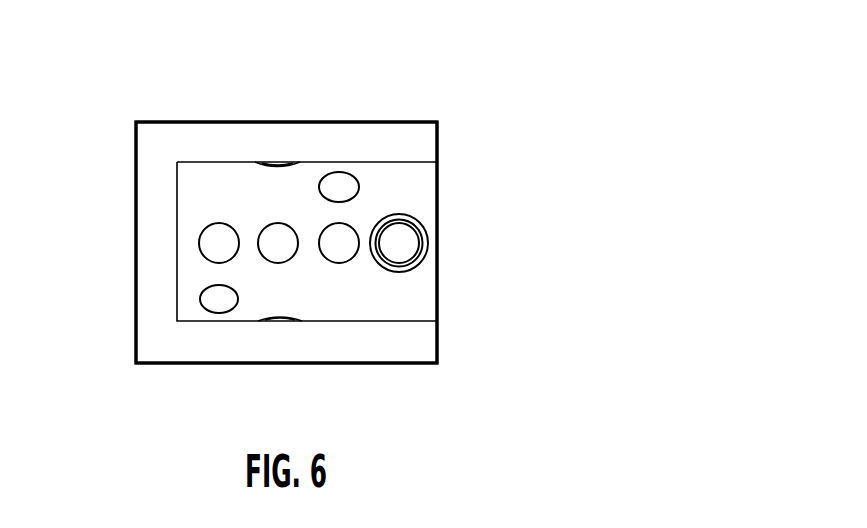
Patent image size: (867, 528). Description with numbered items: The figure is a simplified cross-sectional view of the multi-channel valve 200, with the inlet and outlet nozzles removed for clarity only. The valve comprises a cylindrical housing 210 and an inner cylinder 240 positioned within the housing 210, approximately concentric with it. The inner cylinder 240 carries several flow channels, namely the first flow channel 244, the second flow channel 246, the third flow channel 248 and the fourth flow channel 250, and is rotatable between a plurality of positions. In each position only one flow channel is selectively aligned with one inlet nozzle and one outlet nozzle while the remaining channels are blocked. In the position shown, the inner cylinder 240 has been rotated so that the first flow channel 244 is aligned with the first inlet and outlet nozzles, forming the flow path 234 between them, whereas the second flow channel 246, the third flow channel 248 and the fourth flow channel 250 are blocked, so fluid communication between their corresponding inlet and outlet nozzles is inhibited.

The multi-channel valve 200 is at (448, 97).
The cylindrical housing 210 is at (165, 138).
The flow path 234 is at (398, 247).
The inner cylinder 240 is at (255, 308).
The first flow channel 244 is at (423, 235).
The second flow channel 246 is at (353, 172).
The third flow channel 248 is at (285, 322).
The fourth flow channel 250 is at (200, 297).